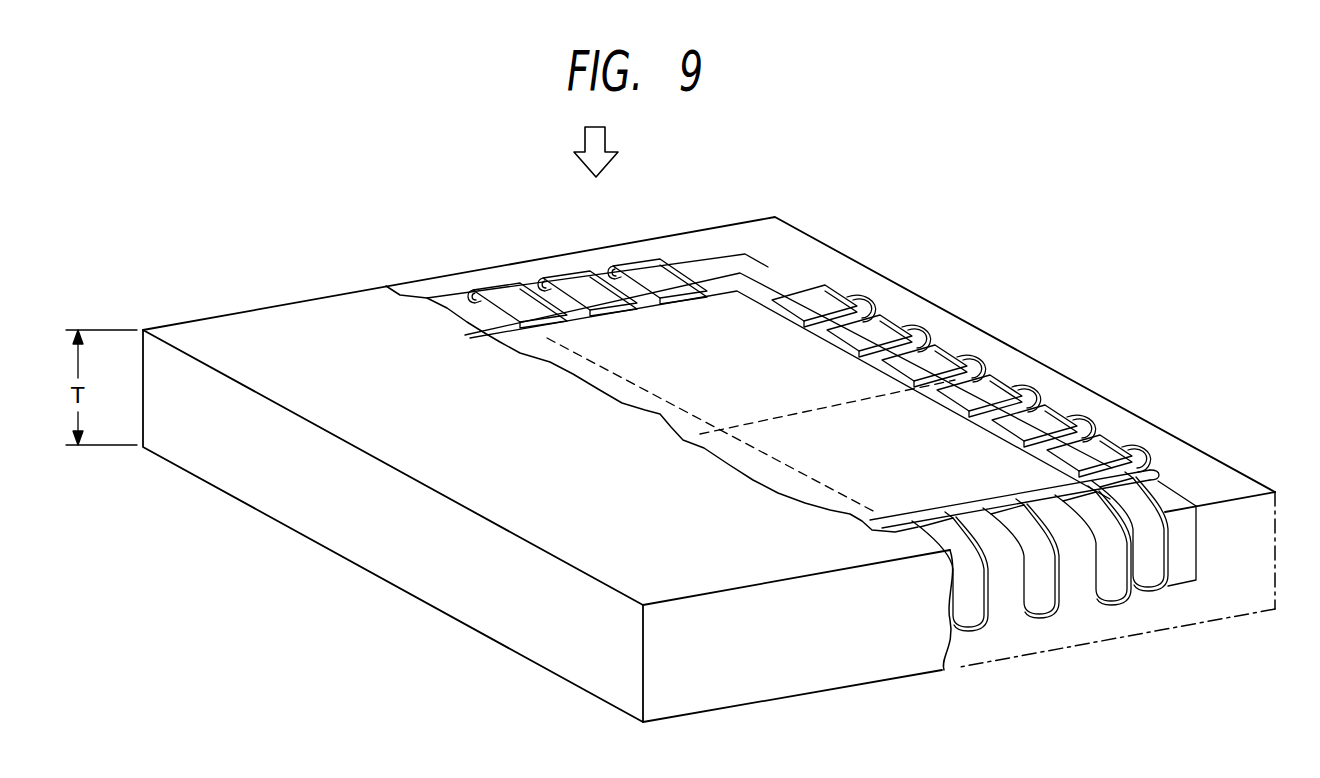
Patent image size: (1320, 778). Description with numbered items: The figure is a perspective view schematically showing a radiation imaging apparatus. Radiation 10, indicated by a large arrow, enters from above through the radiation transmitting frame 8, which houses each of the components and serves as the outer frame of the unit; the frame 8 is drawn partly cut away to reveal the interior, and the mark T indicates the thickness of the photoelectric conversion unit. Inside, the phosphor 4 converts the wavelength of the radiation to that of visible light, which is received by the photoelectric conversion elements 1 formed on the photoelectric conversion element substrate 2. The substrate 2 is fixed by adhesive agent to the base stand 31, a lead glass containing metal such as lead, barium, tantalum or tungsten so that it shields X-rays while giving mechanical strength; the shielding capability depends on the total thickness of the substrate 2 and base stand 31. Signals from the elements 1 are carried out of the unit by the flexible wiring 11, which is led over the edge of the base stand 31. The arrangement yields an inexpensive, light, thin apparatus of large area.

The photoelectric conversion element 1 is at (1067, 427).
The photoelectric conversion element substrate 2 is at (1153, 478).
The phosphor 4 is at (737, 315).
The radiation transmitting frame 8 is at (820, 553).
The radiation 10 is at (612, 131).
The flexible wiring 11 is at (1147, 582).
The base stand 31 is at (1190, 545).